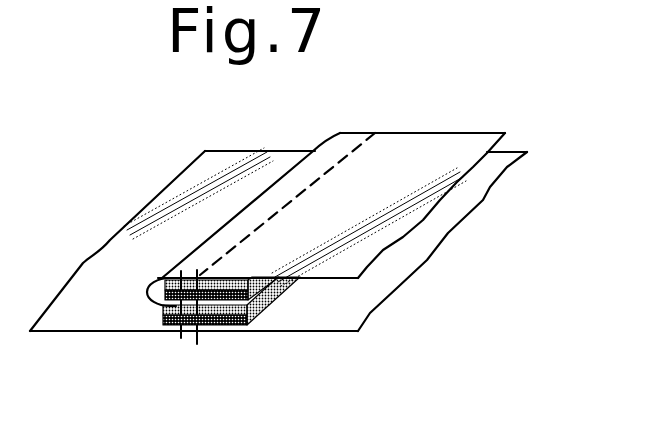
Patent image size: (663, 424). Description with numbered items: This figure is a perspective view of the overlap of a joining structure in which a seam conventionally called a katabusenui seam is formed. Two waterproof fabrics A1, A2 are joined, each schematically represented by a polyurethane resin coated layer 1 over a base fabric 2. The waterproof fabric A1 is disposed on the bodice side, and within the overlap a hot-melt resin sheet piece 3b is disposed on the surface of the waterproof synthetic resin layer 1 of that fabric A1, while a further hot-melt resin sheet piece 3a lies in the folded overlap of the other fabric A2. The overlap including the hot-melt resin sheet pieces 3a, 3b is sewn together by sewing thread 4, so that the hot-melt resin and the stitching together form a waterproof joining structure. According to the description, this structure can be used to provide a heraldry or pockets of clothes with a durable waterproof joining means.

The polyurethane resin coated layer 1 is at (237, 157).
The base fabric 2 is at (270, 290).
The hot-melt resin sheet piece 3a is at (158, 278).
The hot-melt resin sheet piece 3b is at (163, 313).
The sewing thread 4 is at (363, 150).
The waterproof fabric A1 is at (158, 192).
The waterproof fabric A2 is at (494, 125).